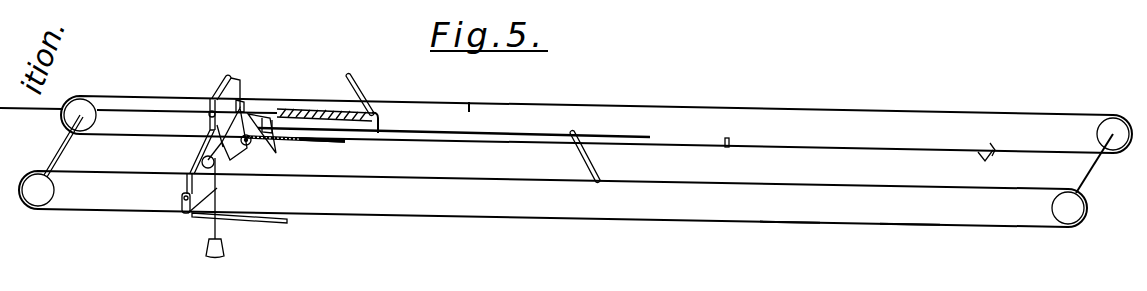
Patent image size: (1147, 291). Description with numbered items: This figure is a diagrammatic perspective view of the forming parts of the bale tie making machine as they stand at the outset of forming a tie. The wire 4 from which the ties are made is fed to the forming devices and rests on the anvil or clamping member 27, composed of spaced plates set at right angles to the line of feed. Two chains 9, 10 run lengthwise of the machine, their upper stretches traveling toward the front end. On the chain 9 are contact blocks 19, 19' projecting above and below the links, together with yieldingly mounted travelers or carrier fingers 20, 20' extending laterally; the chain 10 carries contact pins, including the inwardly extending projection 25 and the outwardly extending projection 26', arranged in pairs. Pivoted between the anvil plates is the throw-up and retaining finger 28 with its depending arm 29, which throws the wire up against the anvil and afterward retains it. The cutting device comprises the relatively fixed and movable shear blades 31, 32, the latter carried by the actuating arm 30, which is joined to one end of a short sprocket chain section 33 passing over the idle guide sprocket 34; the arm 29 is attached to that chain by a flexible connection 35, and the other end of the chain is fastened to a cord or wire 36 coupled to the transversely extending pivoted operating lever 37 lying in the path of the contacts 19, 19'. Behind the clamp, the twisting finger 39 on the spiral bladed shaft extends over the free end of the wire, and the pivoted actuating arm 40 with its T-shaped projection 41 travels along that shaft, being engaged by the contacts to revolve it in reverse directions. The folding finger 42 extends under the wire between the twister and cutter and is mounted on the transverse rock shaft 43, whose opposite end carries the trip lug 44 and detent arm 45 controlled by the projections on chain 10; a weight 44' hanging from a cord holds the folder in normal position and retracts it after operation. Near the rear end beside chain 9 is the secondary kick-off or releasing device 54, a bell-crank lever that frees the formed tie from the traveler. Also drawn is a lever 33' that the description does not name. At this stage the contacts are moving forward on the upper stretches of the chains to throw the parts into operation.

The wire 4 is at (38, 111).
The chain 9 is at (700, 113).
The chain 10 is at (682, 223).
The contact block 19 is at (480, 95).
The contact block 19' is at (719, 154).
The traveler or carrier finger 20 is at (96, 97).
The traveler or carrier finger 20' is at (1087, 134).
The contact pin 25 is at (792, 224).
The contact pin 26' is at (897, 212).
The anvil or clamping member 27 is at (208, 134).
The throw-up and retaining finger 28 is at (207, 118).
The depending arm 29 is at (221, 125).
The actuating arm 30 is at (275, 145).
The shear blade 31 is at (266, 117).
The shear blade 32 is at (284, 110).
The sprocket chain section 33 is at (328, 150).
The lever 33' is at (187, 212).
The idle guide sprocket 34 is at (247, 146).
The flexible connection 35 is at (240, 168).
The cord or wire 36 is at (524, 139).
The operating lever 37 is at (594, 158).
The twisting finger 39 is at (240, 124).
The actuating arm 40 is at (356, 82).
The T-shaped vertical projection 41 is at (381, 119).
The folding finger 42 is at (274, 150).
The rock shaft 43 is at (196, 164).
The trip lug 44 is at (166, 186).
The weight 44' is at (198, 208).
The detent arm 45 is at (260, 223).
The secondary kick-off or releasing device 54 is at (990, 158).